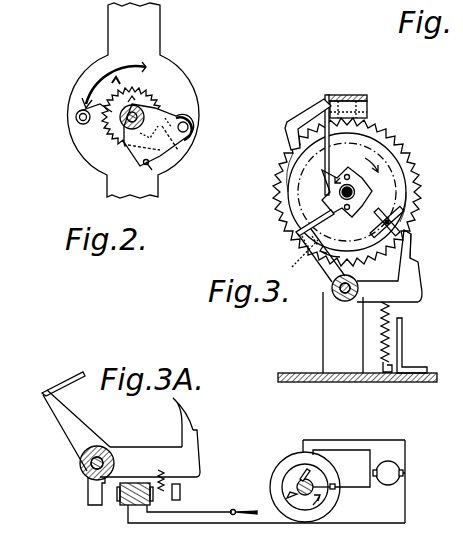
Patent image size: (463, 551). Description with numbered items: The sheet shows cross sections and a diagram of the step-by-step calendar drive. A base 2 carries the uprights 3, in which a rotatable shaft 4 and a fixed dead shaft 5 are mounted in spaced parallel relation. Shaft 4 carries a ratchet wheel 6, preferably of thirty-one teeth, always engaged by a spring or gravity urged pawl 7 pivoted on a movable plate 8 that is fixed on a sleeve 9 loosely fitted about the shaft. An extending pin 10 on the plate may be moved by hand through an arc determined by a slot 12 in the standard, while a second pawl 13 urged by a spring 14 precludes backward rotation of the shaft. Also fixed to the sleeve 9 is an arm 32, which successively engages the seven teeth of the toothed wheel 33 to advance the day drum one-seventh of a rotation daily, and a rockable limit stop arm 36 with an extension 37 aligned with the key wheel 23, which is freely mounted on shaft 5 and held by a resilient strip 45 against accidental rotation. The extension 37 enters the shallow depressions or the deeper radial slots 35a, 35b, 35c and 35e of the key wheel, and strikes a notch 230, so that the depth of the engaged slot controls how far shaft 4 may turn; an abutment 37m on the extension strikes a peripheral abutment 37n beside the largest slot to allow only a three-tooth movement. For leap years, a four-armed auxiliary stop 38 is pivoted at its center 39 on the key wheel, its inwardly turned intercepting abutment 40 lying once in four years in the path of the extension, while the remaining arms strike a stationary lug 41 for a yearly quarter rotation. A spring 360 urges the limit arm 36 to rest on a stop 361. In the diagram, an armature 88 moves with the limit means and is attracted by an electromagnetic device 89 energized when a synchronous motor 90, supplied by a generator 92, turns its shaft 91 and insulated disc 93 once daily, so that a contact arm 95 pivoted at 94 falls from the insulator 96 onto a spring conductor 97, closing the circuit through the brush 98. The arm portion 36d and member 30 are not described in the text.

In FIG. 3, the base 2 is at (290, 382).
In FIG. 2, the upright 3 is at (110, 27).
In FIG. 3, the upright 3 is at (330, 342).
In FIG. 3, the rotatable shaft 4 is at (332, 289).
In FIG. 3A, the rotatable shaft 4 is at (82, 464).
In FIG. 3, the fixed shaft 5 is at (340, 191).
In FIG. 2, the ratchet wheel 6 is at (108, 130).
In FIG. 2, the pawl 7 is at (168, 152).
In FIG. 2, the movable plate 8 is at (122, 146).
In FIG. 2, the sleeve 9 is at (117, 138).
In FIG. 3, the sleeve 9 is at (338, 294).
In FIG. 3A, the sleeve 9 is at (92, 470).
In FIG. 2, the pin 10 is at (136, 160).
In FIG. 2, the slot 12 is at (150, 166).
In FIG. 2, the second pawl 13 is at (103, 105).
In FIG. 2, the spring 14 is at (88, 87).
In FIG. 3, the key wheel 23 is at (302, 233).
In FIG. 3, the member 30 is at (452, 302).
In FIG. 3, the arm 32 is at (312, 227).
In FIG. 3A, the arm 32 is at (68, 378).
In FIG. 3, the toothed wheel 33 is at (365, 190).
In FIG. 3, the radial slot 35a is at (388, 150).
In FIG. 3, the radial slot 35b is at (368, 118).
In FIG. 3, the radial slot 35c is at (290, 205).
In FIG. 3, the radial slot 35e is at (404, 218).
In FIG. 3, the limit stop arm 36 is at (422, 290).
In FIG. 3A, the limit stop arm 36 is at (201, 450).
In FIG. 3, the lever arm portion 36d is at (310, 262).
In FIG. 3, the extension 37 is at (413, 257).
In FIG. 3A, the extension 37 is at (180, 410).
In FIG. 3, the abutment 37m is at (417, 262).
In FIG. 3, the peripheral abutment 37n is at (408, 213).
In FIG. 3, the auxiliary stop 38 is at (384, 222).
In FIG. 3, the pivot center 39 is at (383, 228).
In FIG. 3, the intercepting abutment 40 is at (395, 214).
In FIG. 3, the stationary lug 41 is at (290, 143).
In FIG. 3, the resilient strip 45 is at (324, 168).
In FIG. 3A, the armature 88 is at (104, 500).
In FIG. 3A, the electromagnetic device 89 is at (135, 490).
In FIG. 3A, the synchronous electric motor 90 is at (282, 460).
In FIG. 3A, the shaft 91 is at (300, 472).
In FIG. 3A, the generator 92 is at (393, 462).
In FIG. 3A, the metallic disc 93 is at (325, 472).
In FIG. 3A, the pivot 94 is at (289, 494).
In FIG. 3A, the contact arm 95 is at (296, 483).
In FIG. 3A, the insulator 96 is at (336, 486).
In FIG. 3A, the spring metal conductor 97 is at (240, 510).
In FIG. 3A, the brush 98 is at (336, 498).
In FIG. 3, the notch 230 is at (405, 208).
In FIG. 3, the spring 360 is at (391, 332).
In FIG. 3, the stop 361 is at (403, 320).
In FIG. 3A, the stop 361 is at (182, 488).